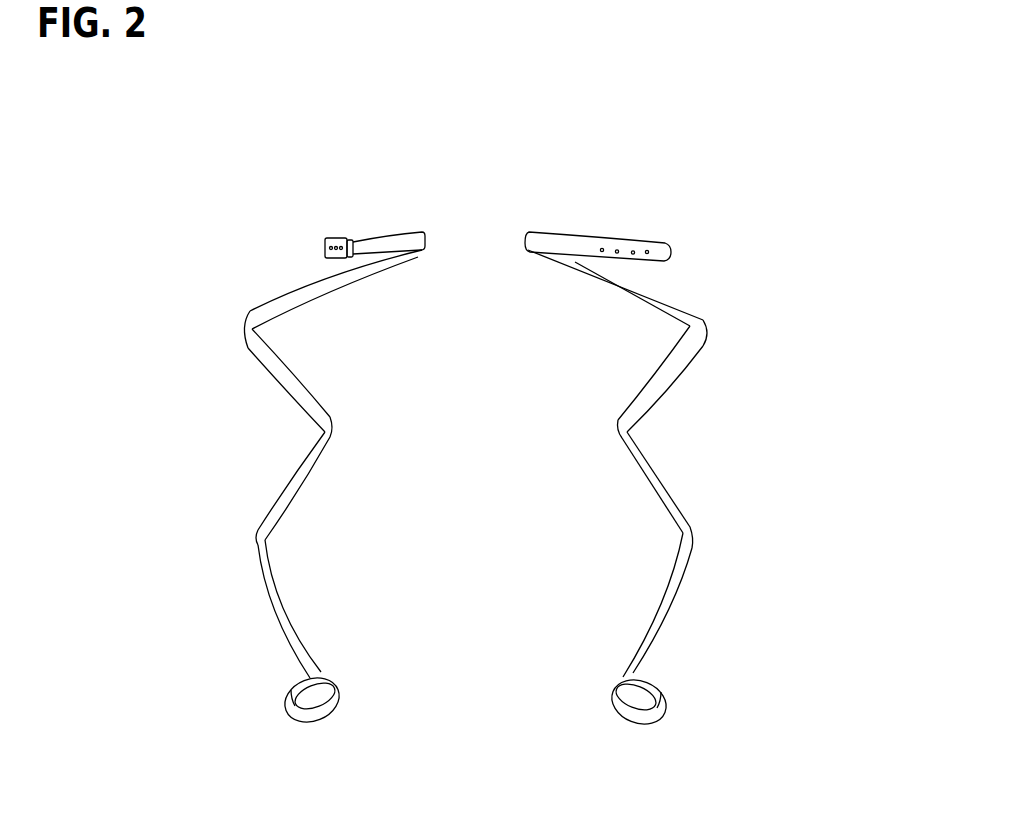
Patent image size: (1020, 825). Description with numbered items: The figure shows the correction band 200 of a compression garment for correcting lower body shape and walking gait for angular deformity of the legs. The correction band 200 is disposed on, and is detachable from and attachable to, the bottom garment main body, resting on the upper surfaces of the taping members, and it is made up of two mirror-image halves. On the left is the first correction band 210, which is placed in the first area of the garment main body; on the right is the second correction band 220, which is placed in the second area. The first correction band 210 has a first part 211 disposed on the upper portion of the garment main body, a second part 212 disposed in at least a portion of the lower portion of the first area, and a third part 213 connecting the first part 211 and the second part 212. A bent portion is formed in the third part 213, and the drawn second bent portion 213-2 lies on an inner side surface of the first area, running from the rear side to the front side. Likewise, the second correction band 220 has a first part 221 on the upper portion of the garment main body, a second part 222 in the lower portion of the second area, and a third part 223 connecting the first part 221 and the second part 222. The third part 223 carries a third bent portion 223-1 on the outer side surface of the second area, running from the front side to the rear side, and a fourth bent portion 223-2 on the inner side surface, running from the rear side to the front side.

The correction band 200 is at (252, 117).
The first correction band 210 is at (243, 291).
The first part 211 is at (378, 236).
The second part 212 is at (288, 711).
The third part 213 is at (283, 485).
The second bent portion 213-2 is at (331, 432).
The second correction band 220 is at (712, 343).
The first part 221 is at (583, 243).
The second part 222 is at (667, 704).
The third part 223 is at (667, 482).
The third bent portion 223-1 is at (693, 547).
The fourth bent portion 223-2 is at (620, 434).